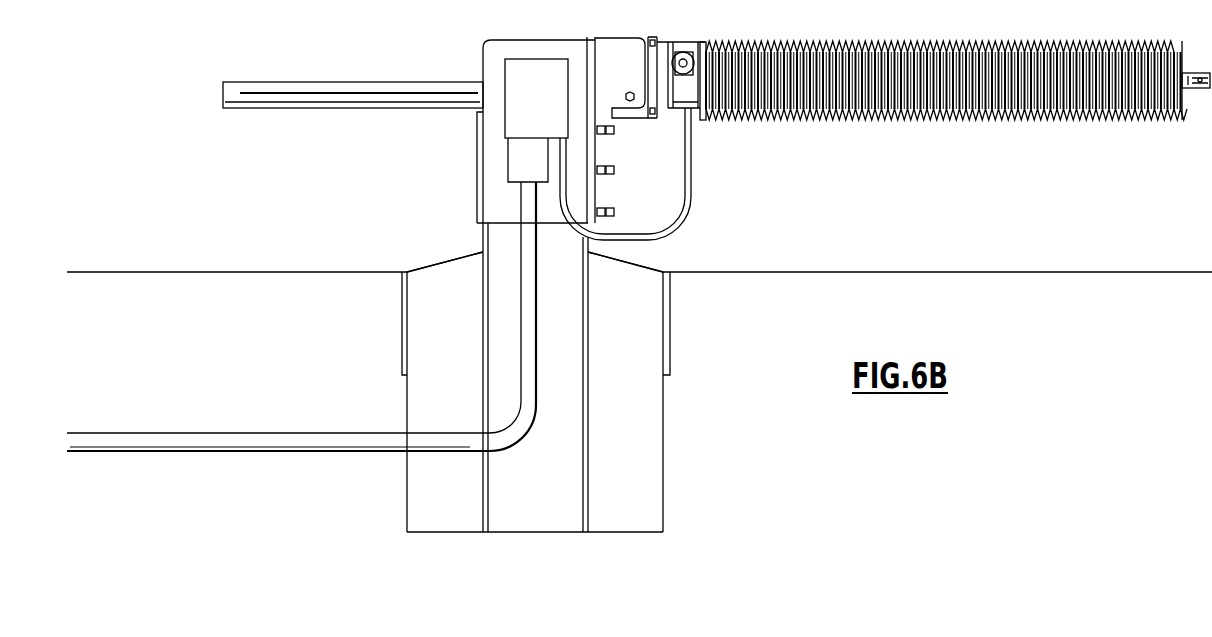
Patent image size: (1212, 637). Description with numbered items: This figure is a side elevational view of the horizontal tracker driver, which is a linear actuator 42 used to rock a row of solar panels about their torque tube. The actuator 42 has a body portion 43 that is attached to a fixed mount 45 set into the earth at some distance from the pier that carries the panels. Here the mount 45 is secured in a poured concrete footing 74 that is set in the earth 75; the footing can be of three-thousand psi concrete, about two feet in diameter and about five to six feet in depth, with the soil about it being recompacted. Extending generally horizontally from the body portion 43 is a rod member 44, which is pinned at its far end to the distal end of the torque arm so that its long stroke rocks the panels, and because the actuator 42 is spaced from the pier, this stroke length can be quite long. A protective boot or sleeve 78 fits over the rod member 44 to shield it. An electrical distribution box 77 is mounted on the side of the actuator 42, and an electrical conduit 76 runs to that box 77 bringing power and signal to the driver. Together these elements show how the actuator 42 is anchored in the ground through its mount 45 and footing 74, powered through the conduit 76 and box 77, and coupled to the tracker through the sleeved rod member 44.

The linear actuator 42 is at (456, 60).
The body portion 43 is at (608, 36).
The rod member 44 is at (958, 82).
The fixed mount 45 is at (483, 236).
The poured concrete footing 74 is at (446, 270).
The earth 75 is at (290, 275).
The electrical conduit 76 is at (330, 440).
The electrical distribution box 77 is at (532, 77).
The protective boot or sleeve 78 is at (805, 118).